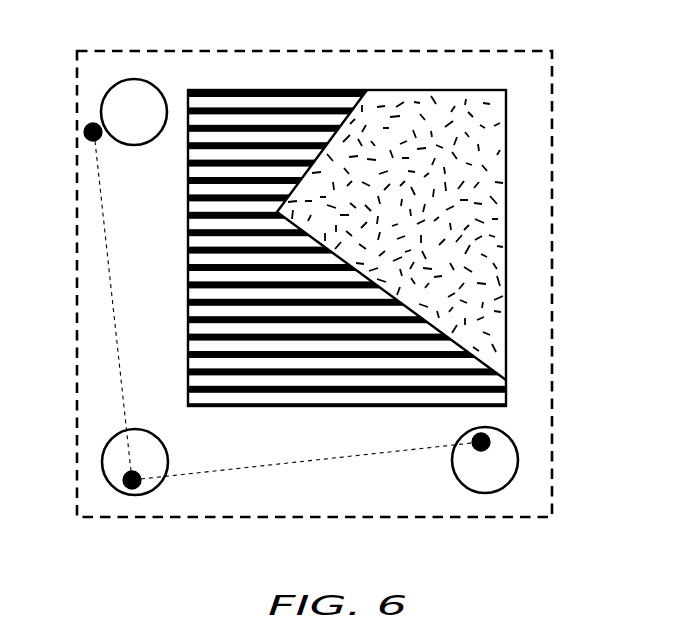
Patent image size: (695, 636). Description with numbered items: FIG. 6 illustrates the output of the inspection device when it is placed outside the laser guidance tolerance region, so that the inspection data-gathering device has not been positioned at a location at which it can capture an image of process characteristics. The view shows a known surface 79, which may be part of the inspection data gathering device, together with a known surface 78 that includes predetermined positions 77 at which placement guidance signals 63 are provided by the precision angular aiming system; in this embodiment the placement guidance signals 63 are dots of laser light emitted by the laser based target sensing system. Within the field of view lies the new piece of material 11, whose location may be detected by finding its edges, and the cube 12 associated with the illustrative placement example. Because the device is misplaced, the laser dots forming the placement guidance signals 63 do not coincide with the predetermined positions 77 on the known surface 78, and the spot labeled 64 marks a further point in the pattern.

The known surface 79 is at (472, 52).
The known surface 78 is at (510, 115).
The cube 12 is at (285, 105).
The new piece of material 11 is at (488, 240).
The predetermined positions 77 is at (133, 79).
The reference point 64 is at (85, 131).
The placement guidance signals 63 is at (125, 478).